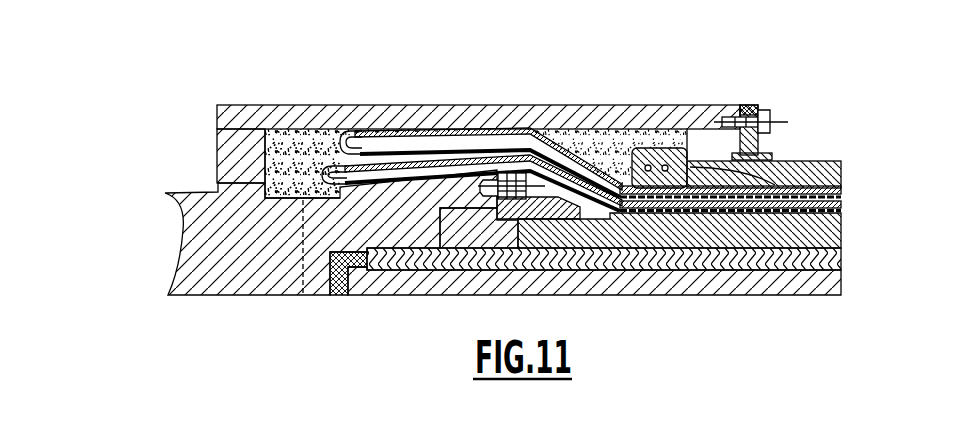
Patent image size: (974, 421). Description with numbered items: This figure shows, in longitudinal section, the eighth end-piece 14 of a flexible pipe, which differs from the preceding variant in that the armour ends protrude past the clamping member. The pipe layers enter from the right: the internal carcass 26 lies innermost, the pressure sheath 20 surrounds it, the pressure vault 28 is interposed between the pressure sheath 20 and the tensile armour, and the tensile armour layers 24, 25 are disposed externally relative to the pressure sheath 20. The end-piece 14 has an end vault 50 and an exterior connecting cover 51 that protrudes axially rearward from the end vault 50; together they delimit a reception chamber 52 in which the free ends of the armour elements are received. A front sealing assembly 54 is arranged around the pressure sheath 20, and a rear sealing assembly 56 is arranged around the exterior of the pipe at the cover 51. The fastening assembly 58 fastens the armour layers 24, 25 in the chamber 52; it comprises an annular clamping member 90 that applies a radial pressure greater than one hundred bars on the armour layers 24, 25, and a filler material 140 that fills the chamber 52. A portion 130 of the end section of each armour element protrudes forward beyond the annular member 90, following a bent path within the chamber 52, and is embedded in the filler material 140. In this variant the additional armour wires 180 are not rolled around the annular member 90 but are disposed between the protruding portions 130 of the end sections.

The end-piece 14 is at (854, 77).
The pressure sheath 20 is at (843, 261).
The tensile armour layer 24 is at (842, 200).
The exterior layer of reinforcing armour 25 is at (840, 190).
The internal carcass 26 is at (815, 286).
The pressure vault 28 is at (843, 230).
The end vault 50 is at (198, 234).
The exterior connecting cover 51 is at (383, 112).
The reception chamber 52 is at (293, 135).
The front sealing assembly 54 is at (452, 259).
The rear sealing assembly 56 is at (774, 106).
The fastening assembly 58 is at (590, 138).
The annular clamping member 90 is at (664, 140).
The protruding portion of the end section 130 is at (534, 126).
The filler material 140 is at (268, 152).
The additional armour wires 180 is at (633, 190).